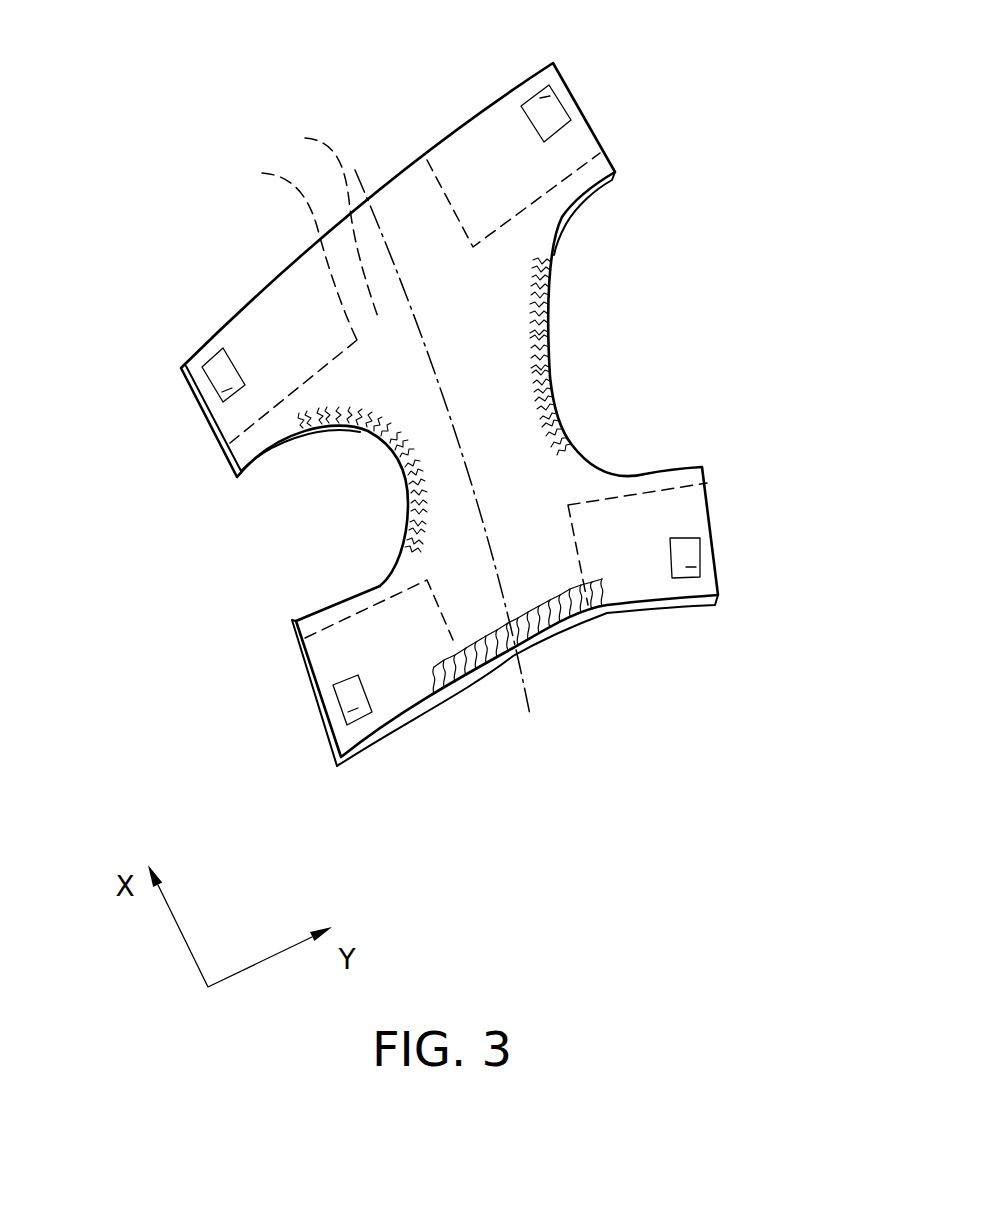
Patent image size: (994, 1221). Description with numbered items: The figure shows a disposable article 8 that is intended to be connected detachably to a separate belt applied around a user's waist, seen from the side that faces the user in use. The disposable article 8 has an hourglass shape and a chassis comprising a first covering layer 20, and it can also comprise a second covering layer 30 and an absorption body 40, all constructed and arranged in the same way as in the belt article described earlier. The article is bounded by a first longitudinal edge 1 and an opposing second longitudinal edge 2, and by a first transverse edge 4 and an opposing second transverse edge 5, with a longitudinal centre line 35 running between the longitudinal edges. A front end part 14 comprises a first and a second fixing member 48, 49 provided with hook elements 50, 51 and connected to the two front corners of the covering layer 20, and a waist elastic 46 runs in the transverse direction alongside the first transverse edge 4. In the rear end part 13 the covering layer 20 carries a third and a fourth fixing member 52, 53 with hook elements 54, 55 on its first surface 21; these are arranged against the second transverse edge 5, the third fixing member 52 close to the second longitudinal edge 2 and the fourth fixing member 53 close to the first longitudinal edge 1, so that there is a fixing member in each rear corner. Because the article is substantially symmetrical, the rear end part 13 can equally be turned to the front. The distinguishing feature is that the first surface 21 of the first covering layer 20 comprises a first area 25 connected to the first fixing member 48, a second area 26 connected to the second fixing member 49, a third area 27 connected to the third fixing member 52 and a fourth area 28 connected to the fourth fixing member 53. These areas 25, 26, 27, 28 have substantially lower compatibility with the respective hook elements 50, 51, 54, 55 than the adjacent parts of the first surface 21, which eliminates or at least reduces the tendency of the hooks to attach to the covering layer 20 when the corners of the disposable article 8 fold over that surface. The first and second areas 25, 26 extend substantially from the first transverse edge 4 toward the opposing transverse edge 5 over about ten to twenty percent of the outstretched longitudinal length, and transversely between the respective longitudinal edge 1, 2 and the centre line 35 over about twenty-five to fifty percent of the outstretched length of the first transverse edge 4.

The disposable article 8 is at (138, 132).
The first longitudinal edge 1 is at (553, 382).
The second longitudinal edge 2 is at (402, 480).
The first transverse edge 4 is at (567, 627).
The second transverse edge 5 is at (404, 165).
The rear end part 13 is at (450, 280).
The front end part 14 is at (533, 530).
The first covering layer 20 is at (410, 220).
The first surface 21 is at (500, 305).
The first area 25 is at (693, 503).
The second area 26 is at (340, 653).
The third area 27 is at (247, 337).
The fourth area 28 is at (493, 147).
The second covering layer 30 is at (322, 220).
The longitudinal centre line 35 is at (530, 703).
The absorption body 40 is at (290, 249).
The waist elastic 46 is at (482, 657).
The first fixing member 48 is at (687, 548).
The second fixing member 49 is at (347, 690).
The hook elements 50 is at (690, 567).
The hook elements 51 is at (352, 710).
The third fixing member 52 is at (213, 372).
The fourth fixing member 53 is at (560, 122).
The hook elements 54 is at (227, 390).
The hook elements 55 is at (545, 100).